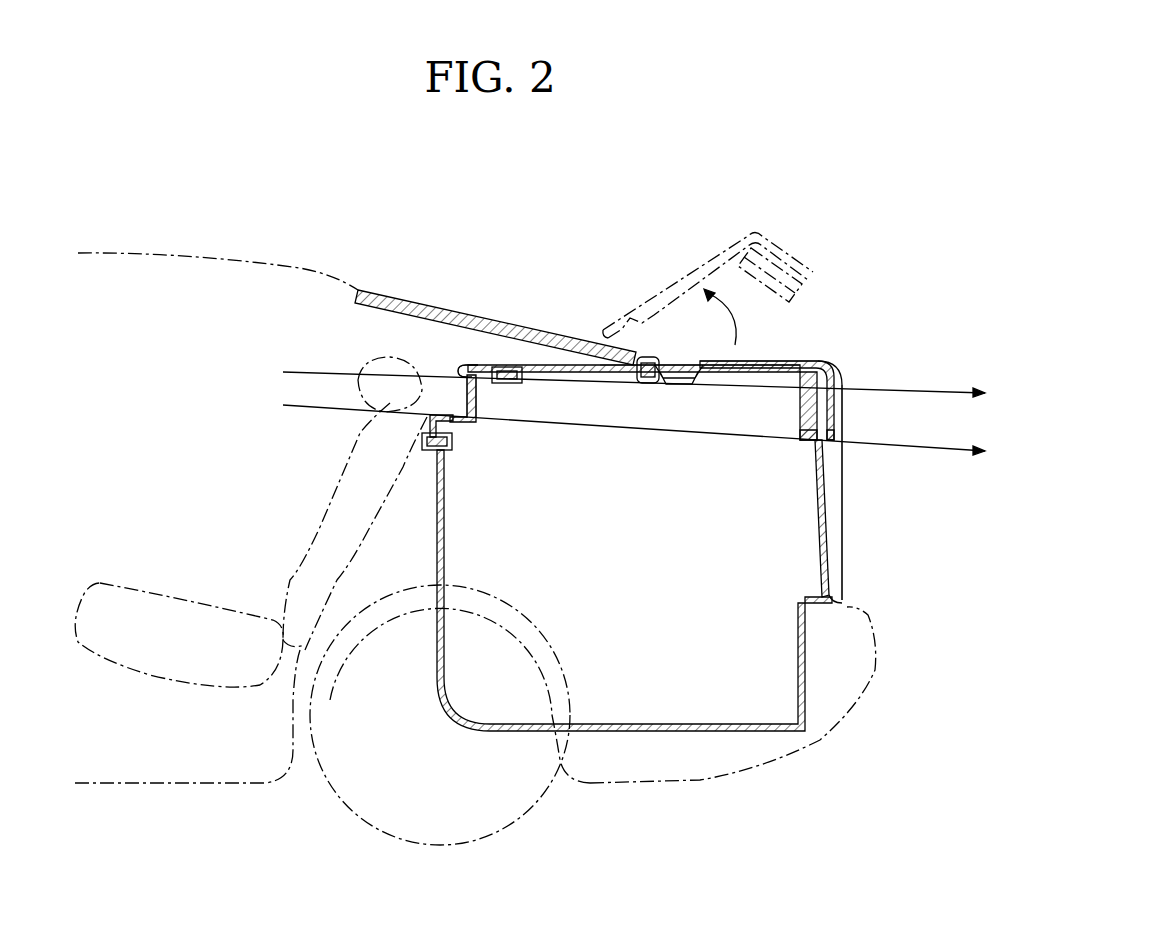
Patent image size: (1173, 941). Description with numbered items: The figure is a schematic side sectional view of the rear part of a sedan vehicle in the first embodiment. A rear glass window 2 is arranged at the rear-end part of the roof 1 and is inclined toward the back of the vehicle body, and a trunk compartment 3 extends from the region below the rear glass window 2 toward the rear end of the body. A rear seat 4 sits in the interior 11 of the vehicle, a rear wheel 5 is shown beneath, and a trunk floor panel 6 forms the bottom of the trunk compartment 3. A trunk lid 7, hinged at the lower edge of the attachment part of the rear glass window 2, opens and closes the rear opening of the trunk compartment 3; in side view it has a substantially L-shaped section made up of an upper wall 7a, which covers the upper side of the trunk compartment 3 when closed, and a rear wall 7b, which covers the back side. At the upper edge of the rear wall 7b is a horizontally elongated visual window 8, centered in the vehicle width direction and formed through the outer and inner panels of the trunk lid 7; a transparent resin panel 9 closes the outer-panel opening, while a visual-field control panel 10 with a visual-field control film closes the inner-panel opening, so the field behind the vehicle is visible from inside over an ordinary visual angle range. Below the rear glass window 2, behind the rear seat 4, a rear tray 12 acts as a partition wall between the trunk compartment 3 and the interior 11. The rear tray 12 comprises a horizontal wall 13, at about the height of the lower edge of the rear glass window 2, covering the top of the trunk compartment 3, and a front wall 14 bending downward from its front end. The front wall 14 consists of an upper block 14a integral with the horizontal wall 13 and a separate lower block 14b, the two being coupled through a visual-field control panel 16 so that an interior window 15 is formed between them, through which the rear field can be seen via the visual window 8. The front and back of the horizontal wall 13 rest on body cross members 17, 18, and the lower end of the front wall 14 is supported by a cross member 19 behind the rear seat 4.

The roof 1 is at (305, 268).
The rear glass window 2 is at (470, 316).
The trunk compartment 3 is at (698, 647).
The rear seat 4 is at (318, 518).
The rear wheel 5 is at (528, 797).
The trunk floor panel 6 is at (805, 718).
The trunk lid 7 is at (762, 230).
The upper wall 7a is at (795, 365).
The rear wall 7b is at (843, 530).
The visual window 8 is at (800, 438).
The transparent resin panel 9 is at (835, 412).
The visual-field control panel 10 is at (802, 420).
The interior 11 is at (197, 515).
The rear tray 12 is at (528, 362).
The horizontal wall 13 is at (627, 358).
The front wall 14 is at (462, 366).
The upper block 14a is at (460, 363).
The lower block 14b is at (456, 423).
The interior window 15 is at (478, 410).
The visual-field control panel 16 is at (480, 393).
The cross member 17 is at (506, 366).
The cross member 18 is at (648, 383).
The cross member 19 is at (428, 455).